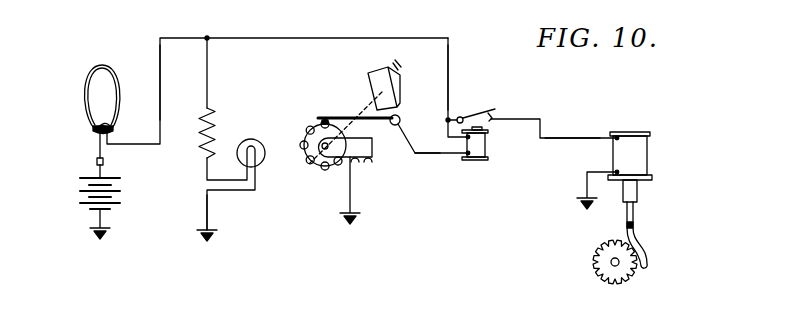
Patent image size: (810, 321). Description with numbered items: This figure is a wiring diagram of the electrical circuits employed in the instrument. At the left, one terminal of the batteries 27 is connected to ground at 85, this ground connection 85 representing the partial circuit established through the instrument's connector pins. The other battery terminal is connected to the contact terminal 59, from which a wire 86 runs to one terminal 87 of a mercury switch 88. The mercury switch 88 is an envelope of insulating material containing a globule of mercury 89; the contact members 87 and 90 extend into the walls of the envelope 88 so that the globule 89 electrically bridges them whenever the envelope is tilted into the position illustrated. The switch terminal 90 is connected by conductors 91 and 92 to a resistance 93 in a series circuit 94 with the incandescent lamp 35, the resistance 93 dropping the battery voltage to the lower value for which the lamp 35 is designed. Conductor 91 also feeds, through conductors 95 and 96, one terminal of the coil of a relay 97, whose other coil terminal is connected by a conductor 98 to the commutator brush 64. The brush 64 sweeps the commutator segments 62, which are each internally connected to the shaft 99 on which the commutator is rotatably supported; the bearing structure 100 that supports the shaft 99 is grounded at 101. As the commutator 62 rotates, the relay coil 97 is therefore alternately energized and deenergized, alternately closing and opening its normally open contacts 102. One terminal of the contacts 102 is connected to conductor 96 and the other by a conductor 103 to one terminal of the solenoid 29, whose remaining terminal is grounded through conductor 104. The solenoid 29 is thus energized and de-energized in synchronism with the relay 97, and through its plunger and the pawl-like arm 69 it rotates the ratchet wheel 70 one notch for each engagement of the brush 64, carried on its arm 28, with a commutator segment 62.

The mercury switch 88 is at (85, 97).
The globule of mercury 89 is at (108, 123).
The contact terminal of mercury switch 87 is at (95, 130).
The switch terminal 90 is at (112, 132).
The wire 86 is at (100, 147).
The contact terminal 59 is at (97, 162).
The batteries 27 is at (85, 193).
The ground connection 85 is at (100, 222).
The conductor 91 is at (160, 55).
The conductor 92 is at (207, 96).
The resistance 93 is at (212, 128).
The incandescent lamp 35 is at (260, 141).
The series circuit 94 is at (207, 207).
The contact arm 28 is at (321, 113).
The commutator brush 64 is at (354, 116).
The commutator segments 62 is at (324, 168).
The bearing structure 100 is at (353, 150).
The shaft 99 is at (308, 165).
The ground connection 101 is at (352, 183).
The conductor 96 is at (446, 129).
The conductor 98 is at (423, 156).
The conductor 95 is at (448, 76).
The relay contacts 102 is at (462, 116).
The relay 97 is at (482, 148).
The conductor 103 is at (577, 137).
The conductor 104 is at (583, 191).
The solenoid 29 is at (647, 152).
The plunger pawl 69 is at (642, 247).
The ratchet wheel 70 is at (607, 271).